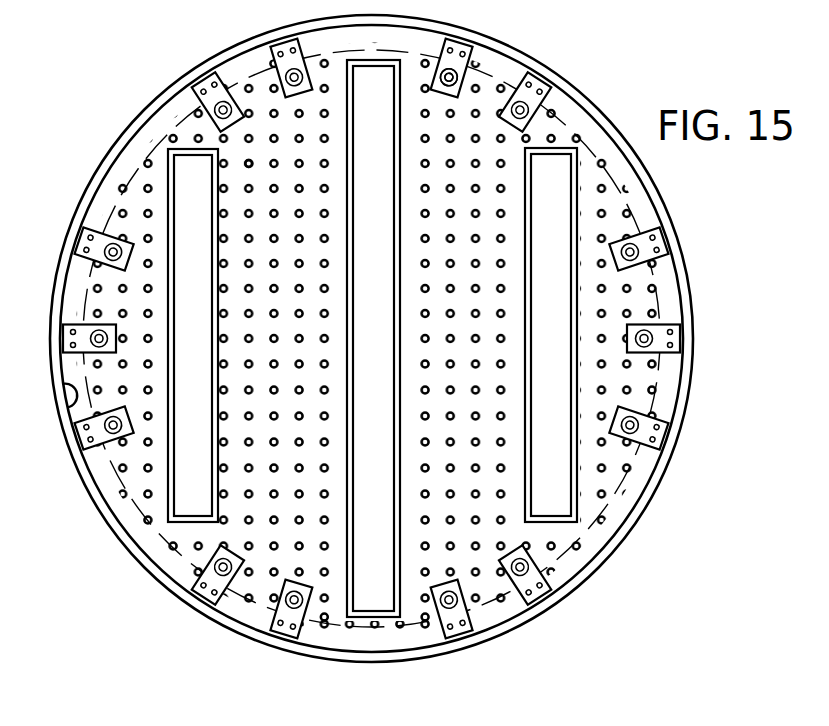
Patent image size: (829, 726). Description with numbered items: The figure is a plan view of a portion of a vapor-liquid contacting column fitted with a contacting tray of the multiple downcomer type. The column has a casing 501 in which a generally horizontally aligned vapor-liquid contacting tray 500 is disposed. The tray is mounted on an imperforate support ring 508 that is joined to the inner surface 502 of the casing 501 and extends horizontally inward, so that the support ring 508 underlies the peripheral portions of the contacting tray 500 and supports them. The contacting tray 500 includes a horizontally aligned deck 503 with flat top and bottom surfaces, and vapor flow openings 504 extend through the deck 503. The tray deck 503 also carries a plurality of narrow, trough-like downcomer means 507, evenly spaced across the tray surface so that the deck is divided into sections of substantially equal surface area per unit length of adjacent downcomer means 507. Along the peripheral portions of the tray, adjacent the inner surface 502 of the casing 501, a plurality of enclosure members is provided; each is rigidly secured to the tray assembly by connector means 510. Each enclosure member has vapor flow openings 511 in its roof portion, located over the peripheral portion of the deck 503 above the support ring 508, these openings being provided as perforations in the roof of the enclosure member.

The vapor-liquid contacting tray 500 is at (540, 128).
The casing 501 is at (650, 500).
The inner surface 502 is at (63, 394).
The deck 503 is at (620, 201).
The vapor flow openings 504 is at (247, 163).
The downcomer means 507 is at (383, 597).
The support ring 508 is at (112, 492).
The connector means 510 is at (449, 76).
The vapor flow openings 511 is at (243, 117).